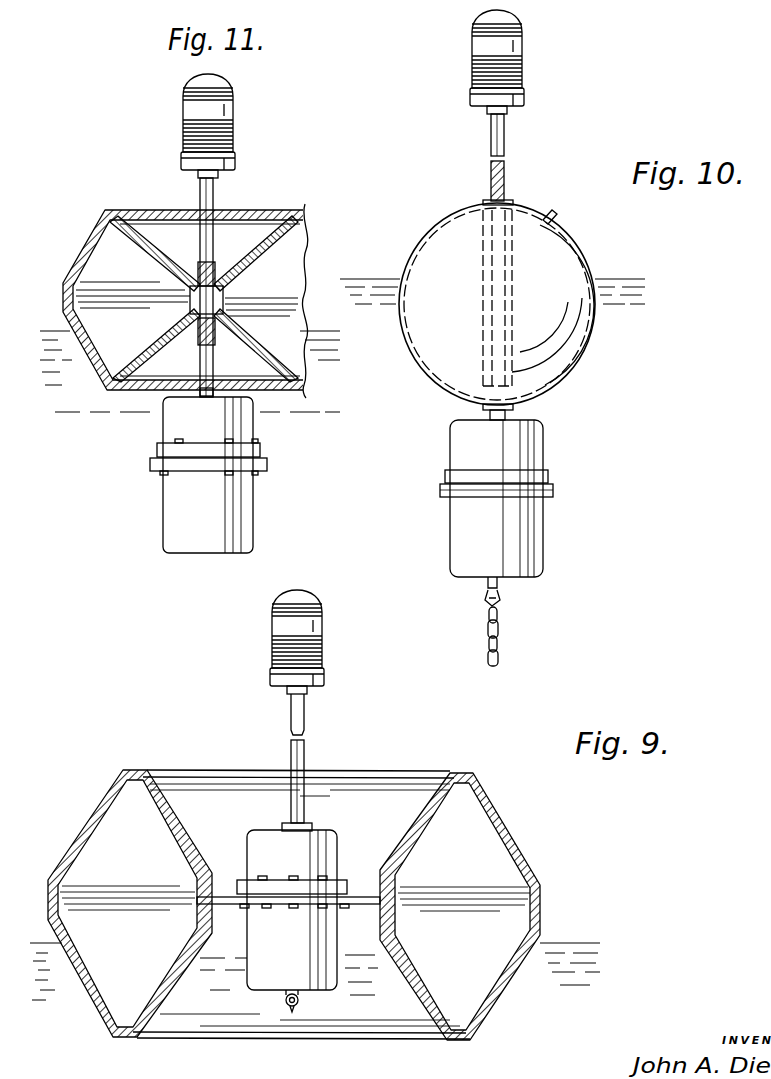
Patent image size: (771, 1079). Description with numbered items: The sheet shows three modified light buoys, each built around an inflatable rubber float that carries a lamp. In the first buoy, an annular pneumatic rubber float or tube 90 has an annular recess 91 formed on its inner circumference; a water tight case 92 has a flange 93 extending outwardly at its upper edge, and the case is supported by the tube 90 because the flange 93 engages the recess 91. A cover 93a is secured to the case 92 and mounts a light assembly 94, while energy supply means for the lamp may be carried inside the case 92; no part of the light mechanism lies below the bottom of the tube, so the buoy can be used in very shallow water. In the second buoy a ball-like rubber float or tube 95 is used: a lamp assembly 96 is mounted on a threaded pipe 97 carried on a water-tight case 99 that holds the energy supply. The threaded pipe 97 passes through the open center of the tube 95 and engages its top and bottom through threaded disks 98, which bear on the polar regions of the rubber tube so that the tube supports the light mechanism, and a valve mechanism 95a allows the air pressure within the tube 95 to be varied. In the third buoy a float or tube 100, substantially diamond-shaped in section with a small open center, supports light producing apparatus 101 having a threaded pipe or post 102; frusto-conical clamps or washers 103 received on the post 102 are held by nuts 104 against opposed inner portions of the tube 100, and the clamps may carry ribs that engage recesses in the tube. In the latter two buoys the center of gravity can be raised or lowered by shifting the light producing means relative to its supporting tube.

In FIG. 9, the annular pneumatic rubber float 90 is at (533, 862).
In FIG. 9, the annular recess 91 is at (366, 898).
In FIG. 9, the water tight case 92 is at (258, 966).
In FIG. 9, the flange 93 is at (362, 905).
In FIG. 9, the cover 93a is at (332, 830).
In FIG. 9, the light assembly 94 is at (324, 676).
In FIG. 10, the ball-like rubber float 95 is at (594, 328).
In FIG. 10, the valve mechanism 95a is at (556, 214).
In FIG. 10, the lamp assembly 96 is at (523, 80).
In FIG. 10, the threaded pipe 97 is at (505, 186).
In FIG. 10, the threaded disks 98 is at (514, 204).
In FIG. 10, the water-tight case 99 is at (543, 442).
In FIG. 11, the diamond-shaped float 100 is at (283, 225).
In FIG. 11, the light producing apparatus 101 is at (222, 172).
In FIG. 11, the threaded post 102 is at (200, 226).
In FIG. 11, the frusto-conical clamps 103 is at (220, 266).
In FIG. 11, the nuts 104 is at (203, 266).